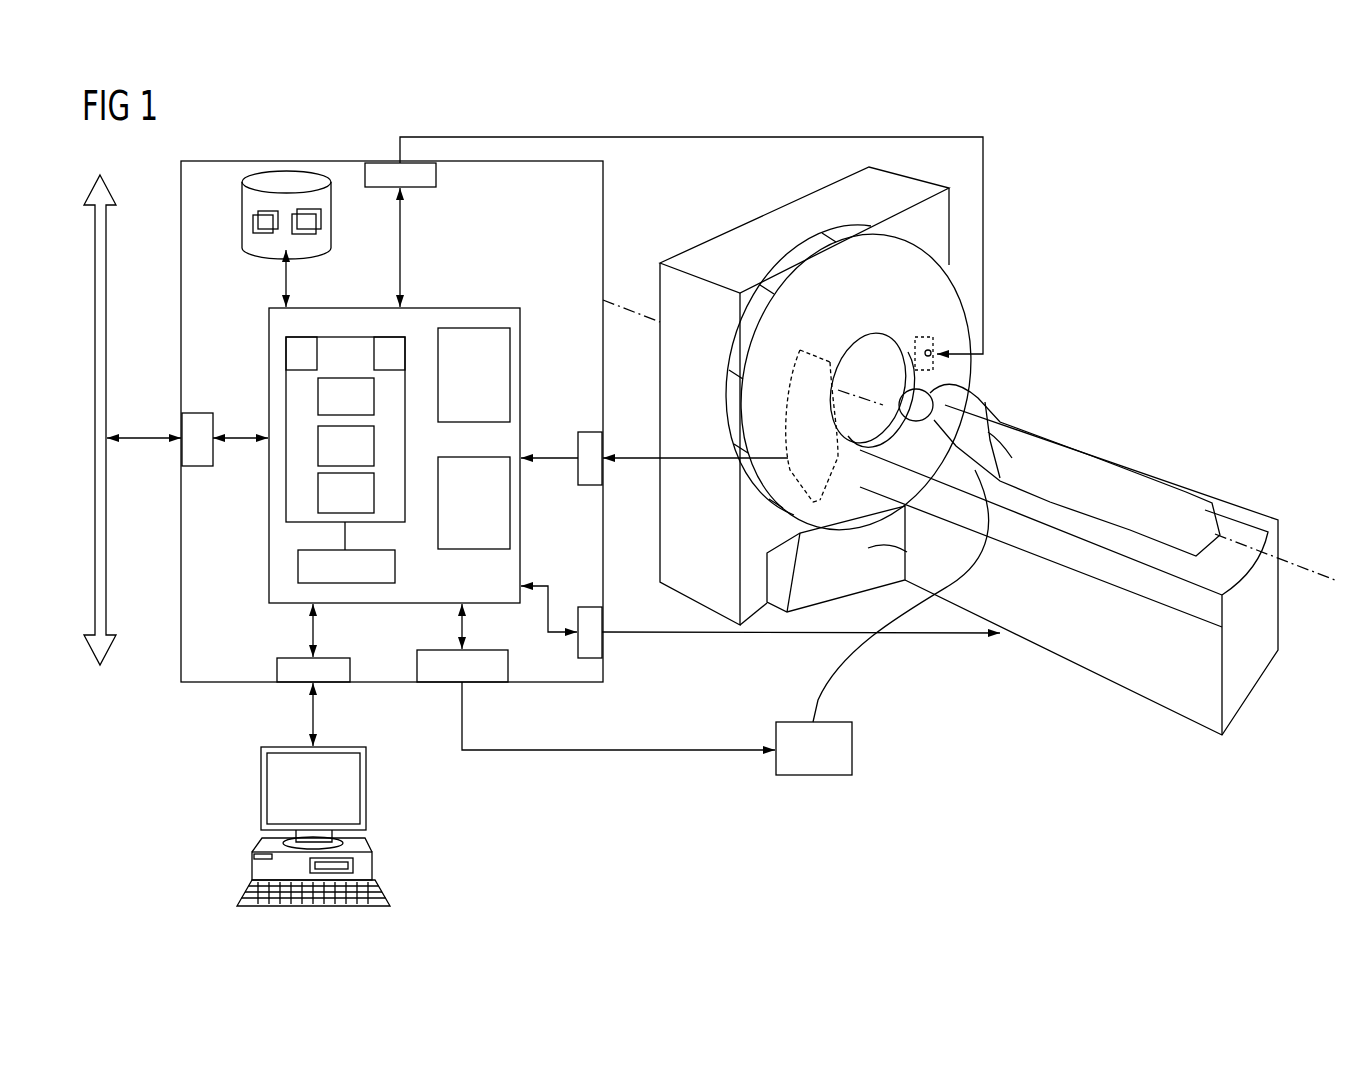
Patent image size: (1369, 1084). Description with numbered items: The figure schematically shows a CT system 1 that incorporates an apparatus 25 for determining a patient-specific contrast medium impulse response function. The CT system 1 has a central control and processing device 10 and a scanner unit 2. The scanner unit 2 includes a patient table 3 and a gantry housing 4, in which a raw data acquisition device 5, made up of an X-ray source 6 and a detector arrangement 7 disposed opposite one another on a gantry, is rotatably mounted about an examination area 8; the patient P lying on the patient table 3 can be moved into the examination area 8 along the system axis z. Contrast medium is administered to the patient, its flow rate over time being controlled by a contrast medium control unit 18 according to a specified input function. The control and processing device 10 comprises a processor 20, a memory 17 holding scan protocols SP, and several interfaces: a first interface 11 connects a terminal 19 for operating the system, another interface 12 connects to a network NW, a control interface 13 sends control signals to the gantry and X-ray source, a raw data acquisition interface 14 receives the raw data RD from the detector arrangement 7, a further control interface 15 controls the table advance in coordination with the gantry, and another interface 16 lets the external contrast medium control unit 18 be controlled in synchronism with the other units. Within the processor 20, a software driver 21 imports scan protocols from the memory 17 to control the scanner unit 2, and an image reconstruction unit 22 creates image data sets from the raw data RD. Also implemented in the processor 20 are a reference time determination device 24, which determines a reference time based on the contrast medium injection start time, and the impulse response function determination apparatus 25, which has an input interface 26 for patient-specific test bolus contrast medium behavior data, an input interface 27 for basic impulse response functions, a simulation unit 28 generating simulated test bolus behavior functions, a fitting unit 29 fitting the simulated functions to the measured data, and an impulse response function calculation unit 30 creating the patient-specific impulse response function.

The CT system 1 is at (1160, 300).
The scanner unit 2 is at (990, 287).
The patient table 3 is at (1225, 505).
The gantry housing 4 is at (948, 283).
The raw data acquisition device 5 is at (938, 340).
The X-ray source 6 is at (928, 337).
The detector arrangement 7 is at (833, 470).
The examination area 8 is at (857, 363).
The central control and processing device 10 is at (210, 161).
The first interface 11 is at (290, 682).
The interface 12 is at (199, 413).
The control interface 13 is at (383, 163).
The raw data acquisition interface 14 is at (590, 440).
The control interface 15 is at (602, 650).
The interface 16 is at (440, 682).
The memory 17 is at (291, 168).
The contrast medium control unit 18 is at (852, 748).
The terminal 19 is at (372, 865).
The processor 20 is at (450, 308).
The driver 21 is at (470, 335).
The image reconstruction unit 22 is at (510, 515).
The reference time determination device 24 is at (395, 568).
The impulse response function determination apparatus 25 is at (340, 350).
The input interface 26 is at (295, 357).
The input interface 27 is at (385, 345).
The simulation unit 28 is at (318, 395).
The fitting unit 29 is at (318, 448).
The impulse response function calculation unit 30 is at (318, 495).